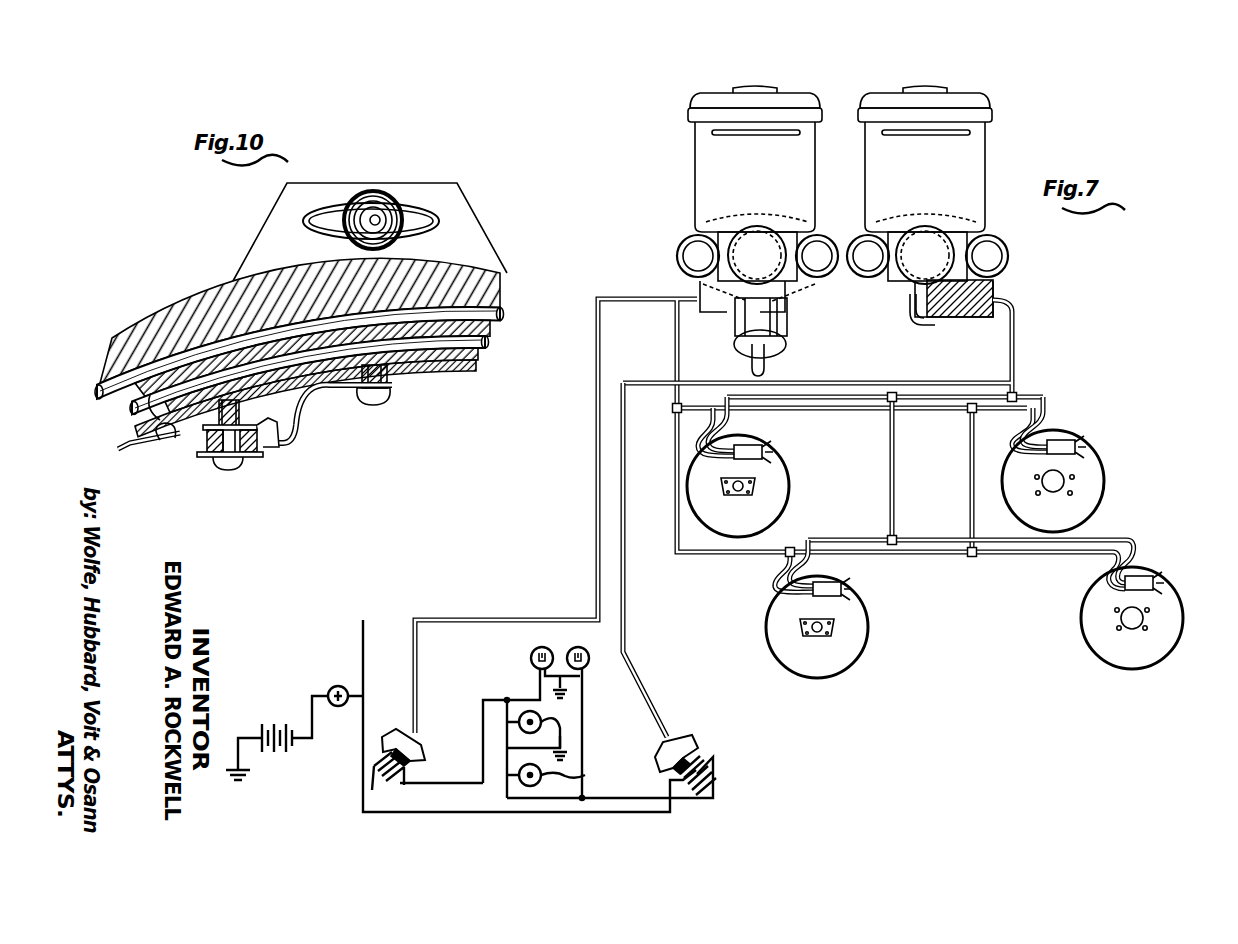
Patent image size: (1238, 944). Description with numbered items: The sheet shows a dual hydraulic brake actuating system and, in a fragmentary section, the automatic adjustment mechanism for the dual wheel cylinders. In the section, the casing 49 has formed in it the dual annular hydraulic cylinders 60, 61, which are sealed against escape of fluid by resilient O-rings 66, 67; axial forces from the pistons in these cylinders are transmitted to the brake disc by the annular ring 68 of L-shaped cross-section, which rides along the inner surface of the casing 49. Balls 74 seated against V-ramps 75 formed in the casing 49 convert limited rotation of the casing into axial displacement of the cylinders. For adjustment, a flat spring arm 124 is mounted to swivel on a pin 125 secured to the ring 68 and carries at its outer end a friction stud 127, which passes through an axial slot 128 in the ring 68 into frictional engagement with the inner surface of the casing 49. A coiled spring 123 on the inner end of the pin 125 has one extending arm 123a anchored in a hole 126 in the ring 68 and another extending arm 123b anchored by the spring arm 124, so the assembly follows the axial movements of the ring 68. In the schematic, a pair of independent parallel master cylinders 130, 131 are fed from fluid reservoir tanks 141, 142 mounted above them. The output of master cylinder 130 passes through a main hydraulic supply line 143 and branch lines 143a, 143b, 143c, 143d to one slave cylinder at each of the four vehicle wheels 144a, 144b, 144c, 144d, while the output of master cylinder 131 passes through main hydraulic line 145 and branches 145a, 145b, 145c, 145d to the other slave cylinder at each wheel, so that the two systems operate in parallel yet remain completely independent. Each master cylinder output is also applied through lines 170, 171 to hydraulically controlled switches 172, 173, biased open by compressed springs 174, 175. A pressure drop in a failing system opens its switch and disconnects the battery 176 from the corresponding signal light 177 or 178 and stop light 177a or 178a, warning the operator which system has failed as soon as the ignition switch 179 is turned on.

In FIG. 10, the casing 49 is at (486, 232).
In FIG. 10, the balls 74 is at (384, 190).
In FIG. 10, the V-ramps 75 is at (434, 204).
In FIG. 10, the annular hydraulic cylinder 61 is at (116, 362).
In FIG. 10, the O-ring 66 is at (517, 306).
In FIG. 10, the O-ring 67 is at (502, 346).
In FIG. 10, the annular ring 68 is at (471, 402).
In FIG. 10, the annular hydraulic cylinder 60 is at (133, 410).
In FIG. 10, the hole 126 is at (160, 453).
In FIG. 10, the coiled spring 123 is at (203, 457).
In FIG. 10, the extending arm 123a is at (186, 458).
In FIG. 10, the extending arm 123b is at (284, 450).
In FIG. 10, the pin 125 is at (233, 472).
In FIG. 10, the flat spring arm 124 is at (323, 400).
In FIG. 10, the axial slot 128 is at (372, 405).
In FIG. 10, the friction stud 127 is at (392, 390).
In FIG. 7, the fluid reservoir tank 141 is at (806, 90).
In FIG. 7, the fluid reservoir tank 142 is at (976, 90).
In FIG. 7, the master cylinder 130 is at (776, 300).
In FIG. 7, the master cylinder 131 is at (893, 290).
In FIG. 7, the main hydraulic supply line 143 is at (675, 341).
In FIG. 7, the main hydraulic line 145 is at (1015, 333).
In FIG. 7, the branch line 143a is at (703, 417).
In FIG. 7, the branch line 143b is at (1024, 433).
In FIG. 7, the branch line 143c is at (768, 580).
In FIG. 7, the branch line 143d is at (1094, 577).
In FIG. 7, the branch 145a is at (733, 421).
In FIG. 7, the branch 145b is at (1048, 408).
In FIG. 7, the branch 145c is at (805, 561).
In FIG. 7, the branch 145d is at (1130, 548).
In FIG. 7, the vehicle wheel 144a is at (790, 479).
In FIG. 7, the vehicle wheel 144b is at (1105, 473).
In FIG. 7, the vehicle wheel 144c is at (862, 655).
In FIG. 7, the vehicle wheel 144d is at (1118, 670).
In FIG. 7, the line 170 is at (596, 556).
In FIG. 7, the line 171 is at (627, 614).
In FIG. 7, the hydraulically controlled switch 172 is at (424, 746).
In FIG. 7, the hydraulically controlled switch 173 is at (683, 735).
In FIG. 7, the compressed spring 174 is at (375, 774).
In FIG. 7, the compressed spring 175 is at (713, 770).
In FIG. 7, the battery 176 is at (270, 725).
In FIG. 7, the signal light 177 is at (530, 658).
In FIG. 7, the signal light 178 is at (588, 663).
In FIG. 7, the stop light 177a is at (557, 729).
In FIG. 7, the stop light 178a is at (581, 776).
In FIG. 7, the ignition switch 179 is at (332, 685).